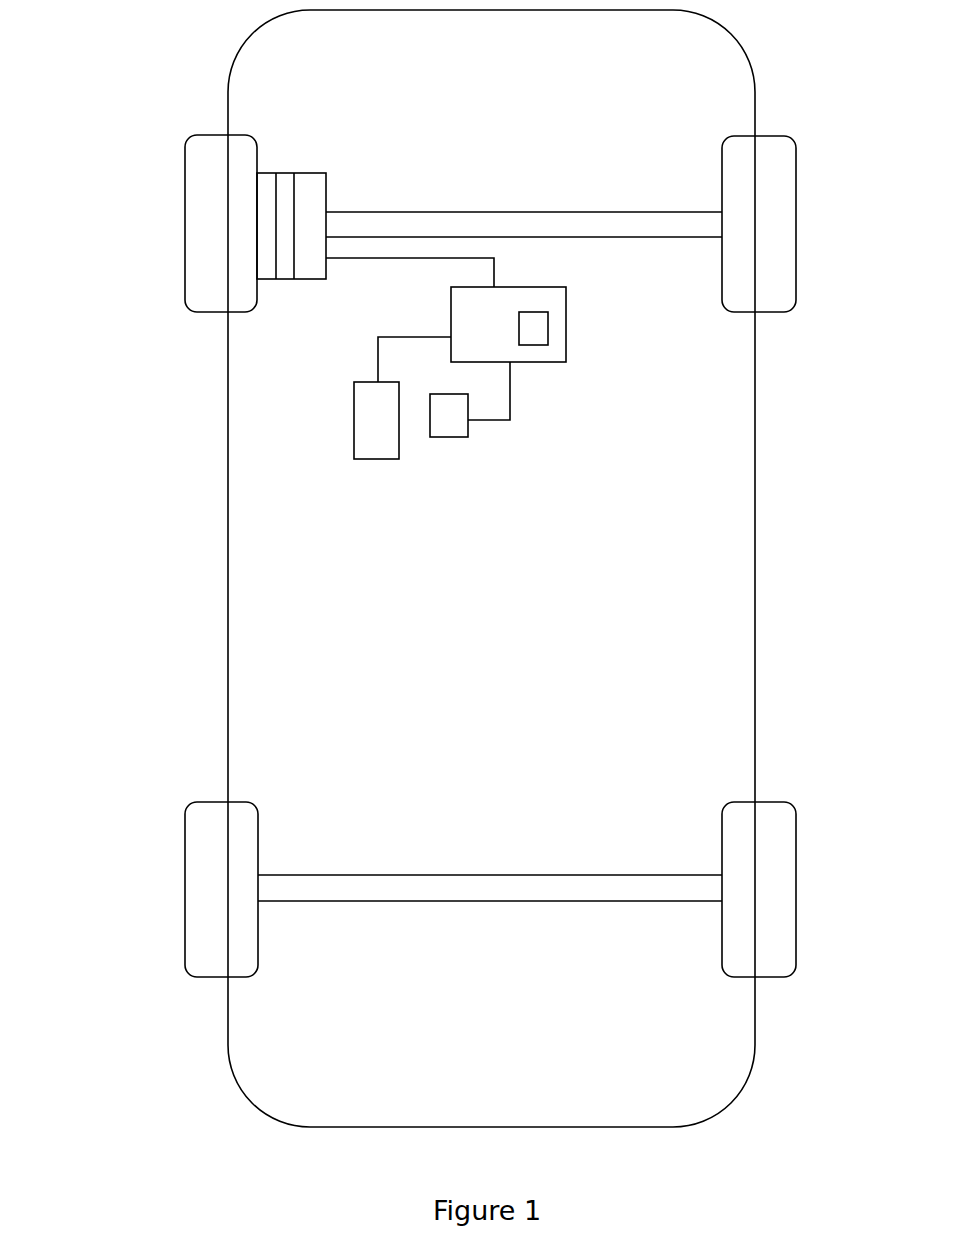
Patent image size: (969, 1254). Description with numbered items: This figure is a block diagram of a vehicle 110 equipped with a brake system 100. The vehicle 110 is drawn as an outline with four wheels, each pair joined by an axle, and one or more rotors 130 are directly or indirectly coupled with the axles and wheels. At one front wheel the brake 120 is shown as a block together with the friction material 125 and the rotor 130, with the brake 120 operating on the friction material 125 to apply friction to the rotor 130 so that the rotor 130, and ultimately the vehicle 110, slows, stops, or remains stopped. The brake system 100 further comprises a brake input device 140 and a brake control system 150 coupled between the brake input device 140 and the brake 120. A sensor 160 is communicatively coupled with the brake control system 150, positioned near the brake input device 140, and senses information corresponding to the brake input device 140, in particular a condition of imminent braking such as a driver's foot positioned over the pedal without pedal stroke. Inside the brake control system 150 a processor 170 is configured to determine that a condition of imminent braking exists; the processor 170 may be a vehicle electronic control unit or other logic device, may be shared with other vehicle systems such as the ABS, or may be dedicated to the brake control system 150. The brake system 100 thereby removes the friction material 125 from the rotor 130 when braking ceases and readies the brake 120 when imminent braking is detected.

The brake system 100 is at (312, 508).
The vehicle 110 is at (158, 52).
The brake 120 is at (318, 185).
The friction material 125 is at (287, 185).
The rotor 130 is at (267, 187).
The brake input device 140 is at (369, 459).
The brake control system 150 is at (567, 310).
The sensor 160 is at (448, 437).
The processor 170 is at (548, 332).